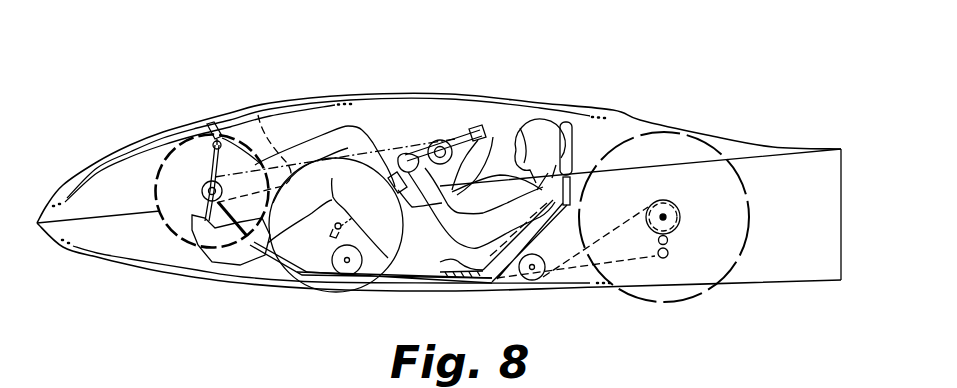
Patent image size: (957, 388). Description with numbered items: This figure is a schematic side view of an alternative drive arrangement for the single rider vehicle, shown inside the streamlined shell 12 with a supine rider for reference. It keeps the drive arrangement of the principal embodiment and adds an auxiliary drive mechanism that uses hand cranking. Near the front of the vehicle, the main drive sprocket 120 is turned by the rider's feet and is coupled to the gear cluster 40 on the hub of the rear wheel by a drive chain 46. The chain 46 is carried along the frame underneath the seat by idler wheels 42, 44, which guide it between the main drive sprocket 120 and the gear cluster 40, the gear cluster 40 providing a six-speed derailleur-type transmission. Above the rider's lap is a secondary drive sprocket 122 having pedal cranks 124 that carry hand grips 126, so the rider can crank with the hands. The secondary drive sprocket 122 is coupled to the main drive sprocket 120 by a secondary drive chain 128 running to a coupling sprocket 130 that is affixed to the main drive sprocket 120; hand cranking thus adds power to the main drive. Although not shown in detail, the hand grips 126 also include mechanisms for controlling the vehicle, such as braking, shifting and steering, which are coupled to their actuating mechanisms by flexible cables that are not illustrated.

The streamlined shell 12 is at (613, 110).
The gear cluster 40 is at (677, 203).
The idler pulleys 42 is at (530, 281).
The idler pulleys 44 is at (347, 276).
The drive chain 46 is at (263, 260).
The main drive sprocket 120 is at (154, 168).
The secondary drive sprocket 122 is at (448, 140).
The pedal cranks 124 is at (419, 157).
The hand grips 126 is at (403, 156).
The secondary drive chain 128 is at (258, 115).
The coupling sprocket 130 is at (204, 187).